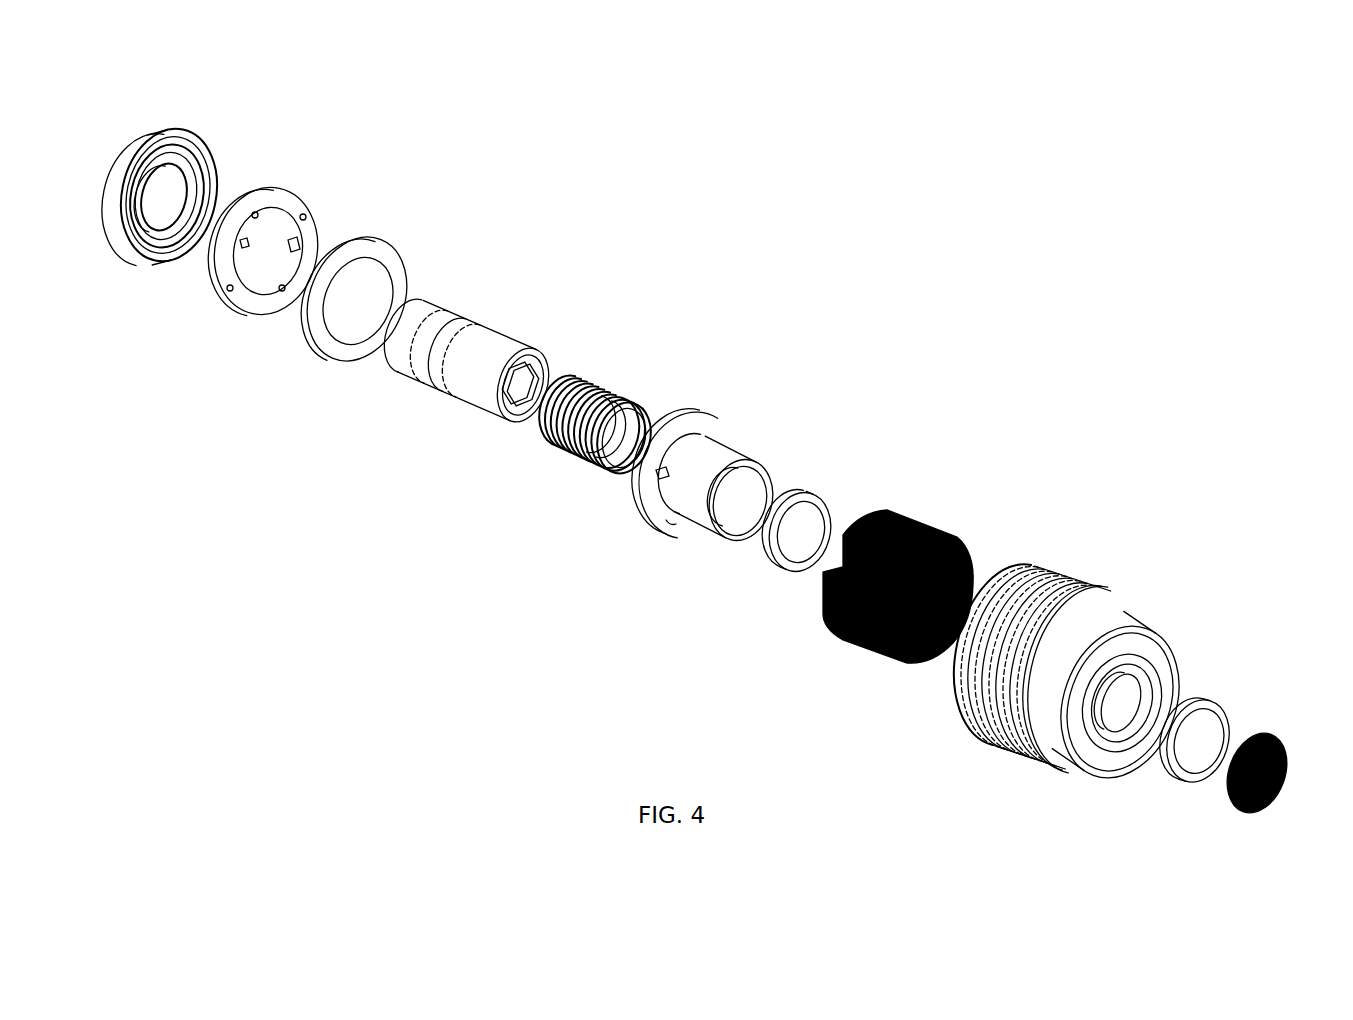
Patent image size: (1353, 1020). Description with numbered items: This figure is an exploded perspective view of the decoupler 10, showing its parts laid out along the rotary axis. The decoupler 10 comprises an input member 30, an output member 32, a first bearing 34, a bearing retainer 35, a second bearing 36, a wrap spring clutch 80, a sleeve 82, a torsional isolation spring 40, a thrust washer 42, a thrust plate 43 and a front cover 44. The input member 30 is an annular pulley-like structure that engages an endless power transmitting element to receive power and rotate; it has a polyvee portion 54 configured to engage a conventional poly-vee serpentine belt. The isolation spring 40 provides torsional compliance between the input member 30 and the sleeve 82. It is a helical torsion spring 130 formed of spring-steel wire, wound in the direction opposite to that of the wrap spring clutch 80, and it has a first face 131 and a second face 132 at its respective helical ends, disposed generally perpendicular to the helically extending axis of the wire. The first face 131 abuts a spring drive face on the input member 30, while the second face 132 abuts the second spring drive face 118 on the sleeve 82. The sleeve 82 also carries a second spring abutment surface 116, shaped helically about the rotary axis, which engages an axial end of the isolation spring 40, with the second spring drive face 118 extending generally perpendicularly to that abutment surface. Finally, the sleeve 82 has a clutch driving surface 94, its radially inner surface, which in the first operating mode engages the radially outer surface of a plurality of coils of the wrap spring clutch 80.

The decoupler 10 is at (864, 267).
The input member 30 is at (1071, 617).
The output member 32 is at (467, 322).
The first bearing 34 is at (1217, 703).
The bearing retainer 35 is at (767, 557).
The second bearing 36 is at (188, 136).
The torsional isolation spring 40 is at (926, 504).
The thrust washer 42 is at (378, 240).
The thrust plate 43 is at (293, 188).
The front cover 44 is at (1268, 737).
The polyvee portion 54 is at (1047, 597).
The wrap spring clutch 80 is at (598, 382).
The sleeve 82 is at (672, 491).
The clutch driving surface 94 is at (743, 497).
The second spring abutment surface 116 is at (668, 522).
The second spring drive face 118 is at (660, 474).
The torsion spring 130 is at (926, 504).
The first face 131 is at (967, 560).
The second face 132 is at (832, 570).